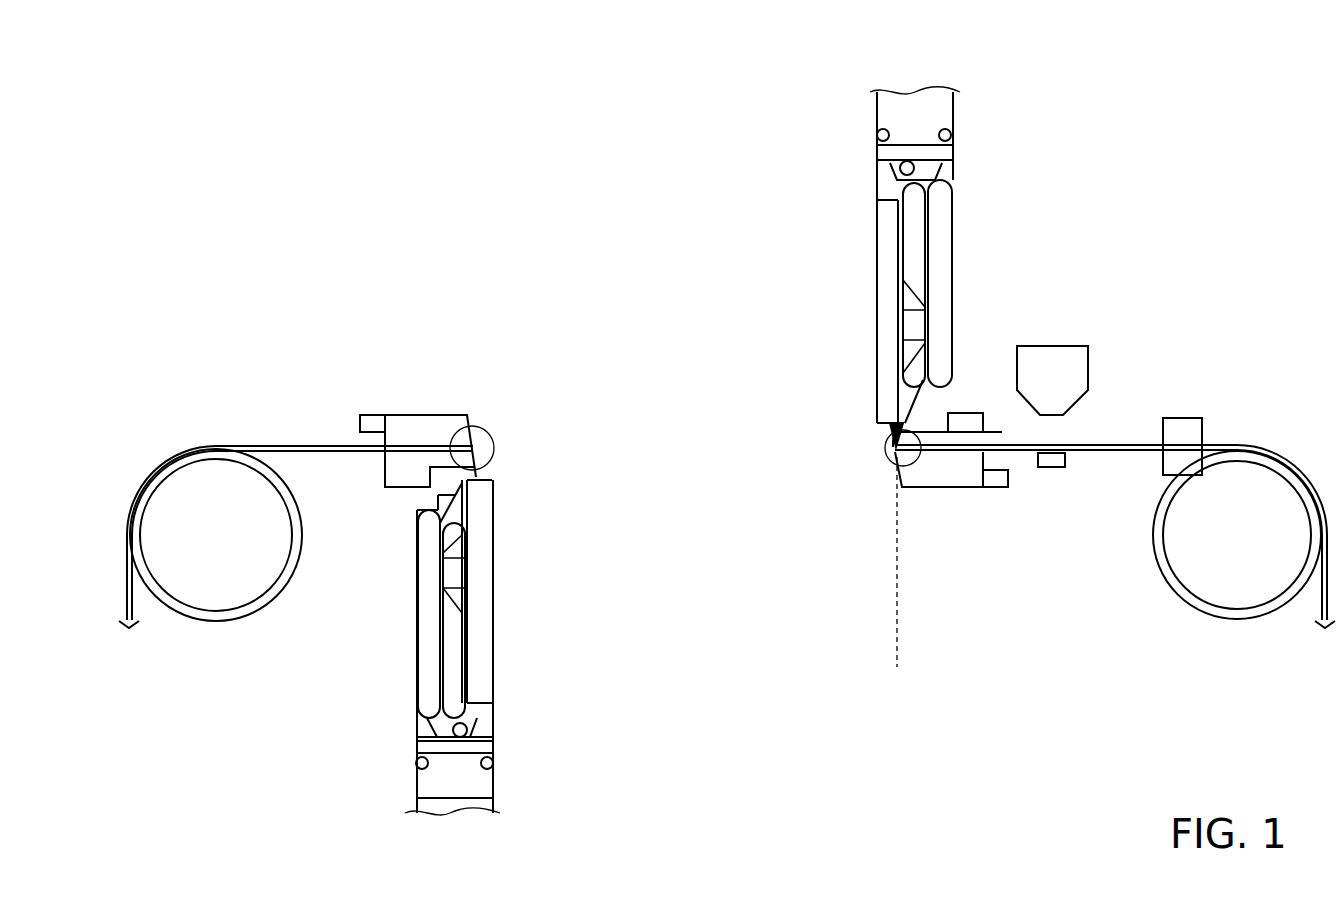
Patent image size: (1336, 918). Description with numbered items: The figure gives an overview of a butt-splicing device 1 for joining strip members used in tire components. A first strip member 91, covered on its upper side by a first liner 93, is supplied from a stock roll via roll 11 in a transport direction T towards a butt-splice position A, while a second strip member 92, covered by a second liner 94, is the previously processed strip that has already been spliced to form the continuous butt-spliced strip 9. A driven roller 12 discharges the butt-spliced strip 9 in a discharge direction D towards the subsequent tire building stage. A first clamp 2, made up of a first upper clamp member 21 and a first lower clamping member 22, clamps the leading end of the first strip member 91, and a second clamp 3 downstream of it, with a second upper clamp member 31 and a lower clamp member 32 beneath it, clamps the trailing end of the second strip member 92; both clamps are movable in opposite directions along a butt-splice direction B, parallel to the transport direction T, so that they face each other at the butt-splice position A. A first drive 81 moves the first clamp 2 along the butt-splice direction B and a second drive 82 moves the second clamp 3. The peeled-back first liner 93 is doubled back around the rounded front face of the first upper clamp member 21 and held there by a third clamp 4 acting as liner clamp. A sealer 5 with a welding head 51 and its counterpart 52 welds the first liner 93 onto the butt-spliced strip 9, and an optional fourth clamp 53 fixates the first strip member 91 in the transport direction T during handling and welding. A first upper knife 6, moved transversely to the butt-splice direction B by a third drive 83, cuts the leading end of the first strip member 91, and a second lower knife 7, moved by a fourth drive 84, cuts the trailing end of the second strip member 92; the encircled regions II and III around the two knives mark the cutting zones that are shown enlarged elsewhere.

The butt-splicing device 1 is at (212, 208).
The first clamp 2 is at (975, 542).
The second clamp 3 is at (432, 367).
The third clamp 4 is at (990, 428).
The sealer 5 is at (1088, 325).
The first upper knife 6 is at (893, 438).
The second lower knife 7 is at (482, 472).
The butt-spliced strip 9 is at (127, 593).
The roll 11 is at (1228, 603).
The driven roller 12 is at (228, 578).
The first upper clamp member 21 is at (930, 430).
The first lower clamping member 22 is at (945, 490).
The second upper clamp member 31 is at (410, 415).
The lower jaw of first head 32 is at (396, 490).
The welding head 51 is at (1062, 373).
The guide element 52 is at (1050, 470).
The fourth clamp 53 is at (1192, 428).
The first drive 81 is at (998, 490).
The support element 82 is at (367, 422).
The third drive 83 is at (888, 118).
The fourth drive 84 is at (425, 767).
The first strip member 91 is at (1113, 453).
The second strip member 92 is at (318, 455).
The first liner 93 is at (997, 428).
The second liner 94 is at (158, 455).
The butt-splice position A is at (885, 569).
The butt-splice direction B is at (757, 380).
The discharge direction D is at (363, 370).
The transport direction T is at (1163, 363).
The detail II is at (893, 462).
The detail III is at (488, 438).